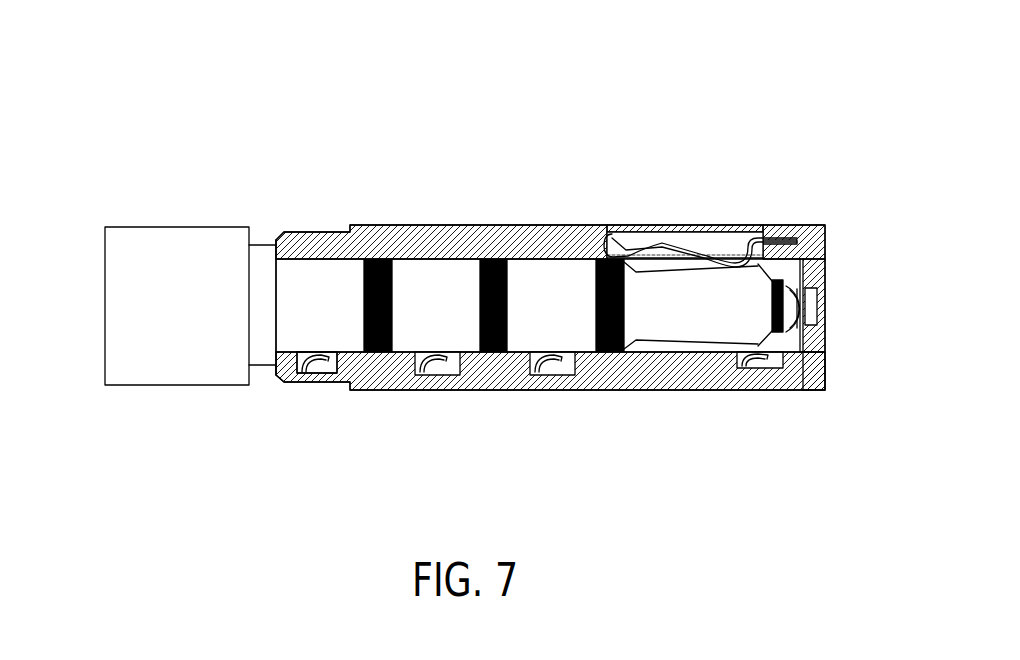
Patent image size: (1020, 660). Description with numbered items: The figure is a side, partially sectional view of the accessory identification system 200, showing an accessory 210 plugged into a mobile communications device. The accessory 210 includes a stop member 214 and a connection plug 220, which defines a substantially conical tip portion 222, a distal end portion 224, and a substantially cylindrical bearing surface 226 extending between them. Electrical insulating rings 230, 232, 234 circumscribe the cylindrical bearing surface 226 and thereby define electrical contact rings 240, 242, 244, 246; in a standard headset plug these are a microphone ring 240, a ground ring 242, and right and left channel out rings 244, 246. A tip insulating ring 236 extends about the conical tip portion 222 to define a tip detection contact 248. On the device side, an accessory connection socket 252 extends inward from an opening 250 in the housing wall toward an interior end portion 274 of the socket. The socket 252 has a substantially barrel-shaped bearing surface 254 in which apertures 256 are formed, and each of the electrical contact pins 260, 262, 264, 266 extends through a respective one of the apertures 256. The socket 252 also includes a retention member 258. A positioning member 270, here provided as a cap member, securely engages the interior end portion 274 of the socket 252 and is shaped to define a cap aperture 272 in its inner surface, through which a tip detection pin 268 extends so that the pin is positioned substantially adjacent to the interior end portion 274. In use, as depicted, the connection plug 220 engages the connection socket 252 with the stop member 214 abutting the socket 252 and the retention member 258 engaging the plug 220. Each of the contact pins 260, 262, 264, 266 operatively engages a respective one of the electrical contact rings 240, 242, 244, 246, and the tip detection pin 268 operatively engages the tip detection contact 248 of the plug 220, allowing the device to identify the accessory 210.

The accessory identification system 200 is at (843, 228).
The accessory 210 is at (167, 302).
The stop member 214 is at (296, 383).
The connection plug 220 is at (526, 257).
The conical tip portion 222 is at (765, 307).
The distal end portion 224 is at (305, 322).
The cylindrical bearing surface 226 is at (405, 360).
The electrical insulating ring 230 is at (363, 310).
The electrical insulating ring 232 is at (478, 310).
The electrical insulating ring 234 is at (594, 305).
The tip insulating ring 236 is at (788, 318).
The microphone ring 240 is at (310, 303).
The ground ring 242 is at (437, 303).
The right channel out ring 244 is at (548, 305).
The left channel out ring 246 is at (722, 307).
The tip detection contact 248 is at (820, 370).
The opening 250 is at (277, 280).
The accessory connection socket 252 is at (620, 378).
The barrel-shaped bearing surface 254 is at (413, 347).
The apertures 256 is at (323, 368).
The retention member 258 is at (705, 256).
The electrical contact pin 260 is at (320, 372).
The electrical contact pin 262 is at (438, 365).
The electrical contact pin 264 is at (546, 365).
The electrical contact pin 266 is at (760, 368).
The tip detection pin 268 is at (820, 310).
The positioning member 270 is at (820, 345).
The cap aperture 272 is at (820, 295).
The interior end portion 274 is at (820, 225).